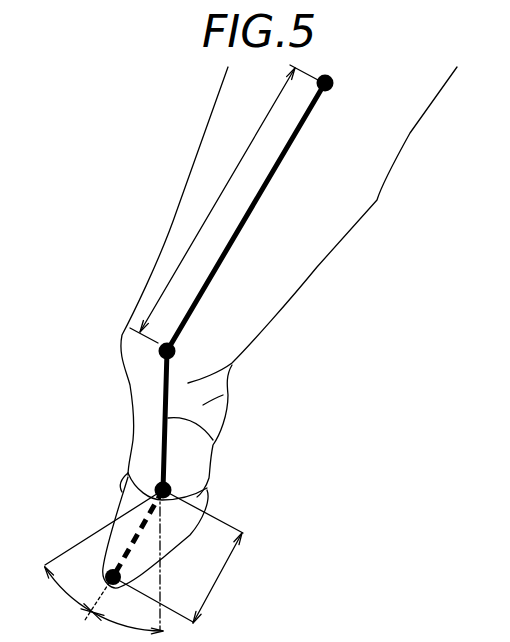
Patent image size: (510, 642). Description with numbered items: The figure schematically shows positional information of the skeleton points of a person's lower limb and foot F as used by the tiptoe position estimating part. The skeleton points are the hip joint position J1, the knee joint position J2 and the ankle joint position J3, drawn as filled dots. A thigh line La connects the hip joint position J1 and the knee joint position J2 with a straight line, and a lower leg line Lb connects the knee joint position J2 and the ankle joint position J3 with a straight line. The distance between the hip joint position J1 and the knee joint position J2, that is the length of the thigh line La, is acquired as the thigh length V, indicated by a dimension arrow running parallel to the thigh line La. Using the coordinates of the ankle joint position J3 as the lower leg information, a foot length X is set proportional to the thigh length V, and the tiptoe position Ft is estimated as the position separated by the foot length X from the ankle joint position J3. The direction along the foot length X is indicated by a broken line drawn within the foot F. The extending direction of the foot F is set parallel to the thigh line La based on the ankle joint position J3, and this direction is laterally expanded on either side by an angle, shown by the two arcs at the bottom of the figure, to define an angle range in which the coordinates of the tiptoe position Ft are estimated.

The hip joint position J1 is at (334, 82).
The knee joint position J2 is at (176, 350).
The ankle joint position J3 is at (156, 484).
The thigh line La is at (263, 193).
The lower leg line Lb is at (213, 440).
The foot F is at (213, 492).
The tiptoe position Ft is at (107, 578).
The thigh length V is at (224, 204).
The foot length X is at (178, 556).